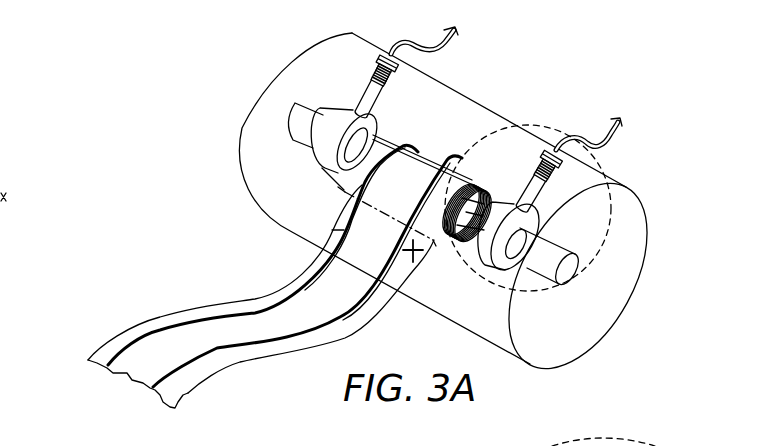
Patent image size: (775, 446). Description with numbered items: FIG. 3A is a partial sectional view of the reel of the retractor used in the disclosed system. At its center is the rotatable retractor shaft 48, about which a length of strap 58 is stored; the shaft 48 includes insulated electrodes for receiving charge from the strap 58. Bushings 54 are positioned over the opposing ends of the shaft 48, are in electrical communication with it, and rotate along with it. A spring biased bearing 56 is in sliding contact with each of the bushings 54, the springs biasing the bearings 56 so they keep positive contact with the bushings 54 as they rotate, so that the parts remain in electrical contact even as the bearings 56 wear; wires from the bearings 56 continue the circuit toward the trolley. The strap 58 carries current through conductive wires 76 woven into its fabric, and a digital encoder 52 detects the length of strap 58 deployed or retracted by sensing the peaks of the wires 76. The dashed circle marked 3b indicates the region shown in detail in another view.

The retractor shaft 48 is at (377, 137).
The digital encoder 52 is at (330, 192).
The bushings 54 is at (303, 122).
The spring biased bearing 56 is at (373, 99).
The strap 58 is at (188, 393).
The conductive wires 76 is at (103, 368).
The detail view circle 3b is at (612, 205).